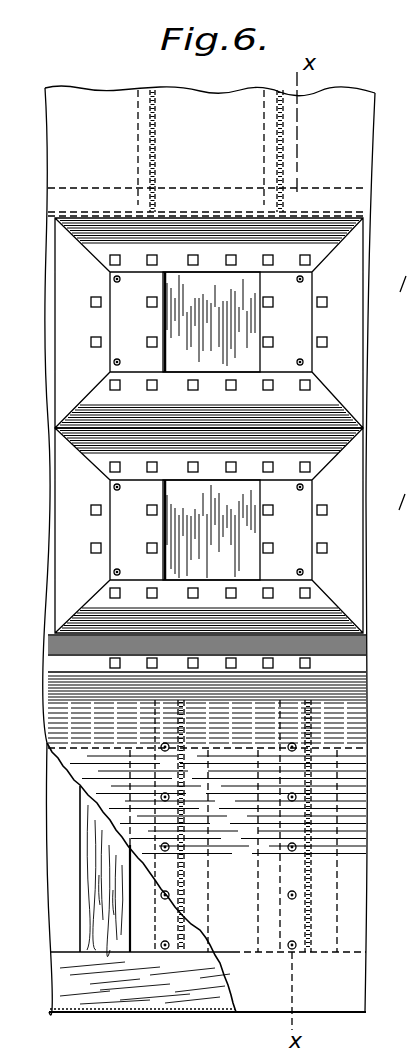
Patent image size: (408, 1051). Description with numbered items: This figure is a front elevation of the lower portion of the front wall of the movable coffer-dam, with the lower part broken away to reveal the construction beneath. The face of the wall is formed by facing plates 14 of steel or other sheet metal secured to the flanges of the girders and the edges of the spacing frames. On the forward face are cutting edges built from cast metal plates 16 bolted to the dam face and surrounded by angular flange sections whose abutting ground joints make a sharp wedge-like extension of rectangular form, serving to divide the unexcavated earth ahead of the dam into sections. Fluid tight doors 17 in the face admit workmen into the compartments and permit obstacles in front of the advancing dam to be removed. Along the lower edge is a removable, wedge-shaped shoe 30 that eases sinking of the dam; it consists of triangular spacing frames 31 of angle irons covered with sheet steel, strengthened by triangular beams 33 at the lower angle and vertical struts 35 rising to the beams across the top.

The facing plates 14 is at (209, 550).
The cast metal plates 16 is at (283, 374).
The fluid tight doors 17 is at (211, 426).
The removable shoe 30 is at (238, 946).
The triangular spacing frames 31 is at (162, 932).
The triangular beams 33 is at (207, 982).
The vertical struts 35 is at (128, 893).